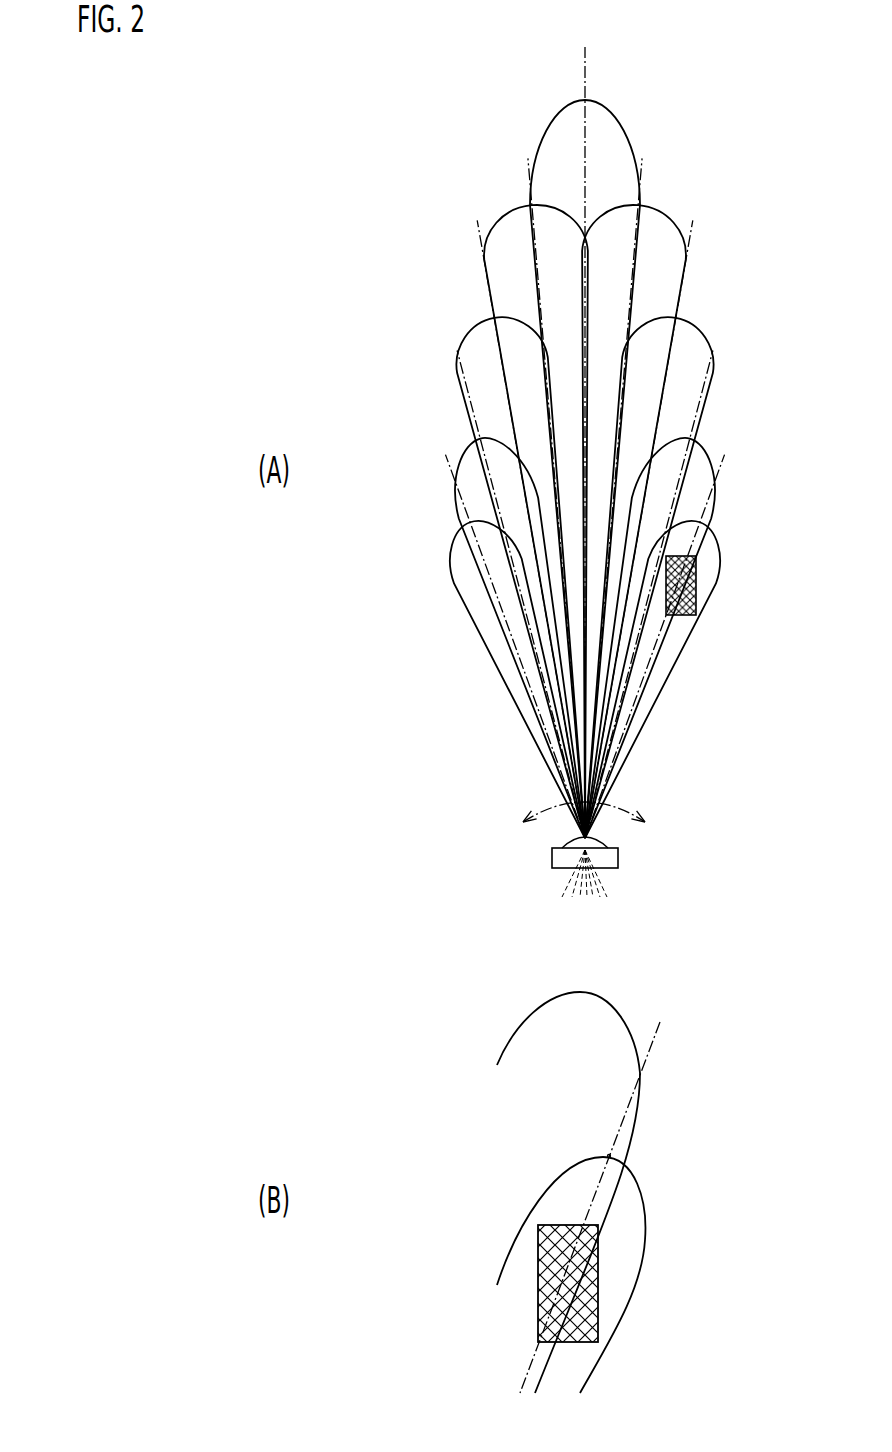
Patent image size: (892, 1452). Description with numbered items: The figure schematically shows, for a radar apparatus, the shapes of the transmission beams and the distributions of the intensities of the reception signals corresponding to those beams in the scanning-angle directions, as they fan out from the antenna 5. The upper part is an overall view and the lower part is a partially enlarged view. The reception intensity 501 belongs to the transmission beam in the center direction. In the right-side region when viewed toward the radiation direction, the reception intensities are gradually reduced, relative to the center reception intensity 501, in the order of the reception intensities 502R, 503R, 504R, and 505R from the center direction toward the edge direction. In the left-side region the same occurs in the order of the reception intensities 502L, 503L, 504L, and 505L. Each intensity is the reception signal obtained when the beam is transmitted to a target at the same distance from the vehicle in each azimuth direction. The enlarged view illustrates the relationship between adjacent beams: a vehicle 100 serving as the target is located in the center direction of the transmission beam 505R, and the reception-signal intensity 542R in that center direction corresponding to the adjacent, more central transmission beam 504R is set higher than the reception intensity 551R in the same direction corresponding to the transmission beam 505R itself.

The reception intensity of transmission beam in center direction 501 is at (643, 115).
The reception intensity 502L is at (469, 240).
The reception intensity 502R is at (705, 239).
The reception intensity 503L is at (444, 327).
The reception intensity 503R is at (727, 326).
The reception intensity 504L is at (439, 437).
The reception intensity 504R is at (729, 439).
The reception intensity 505L is at (432, 522).
The reception intensity 505R is at (737, 521).
The reception-signal intensity 542R is at (661, 1076).
The reception intensity 551R is at (592, 1144).
The vehicle 100 is at (690, 587).
The antenna 5 is at (618, 862).